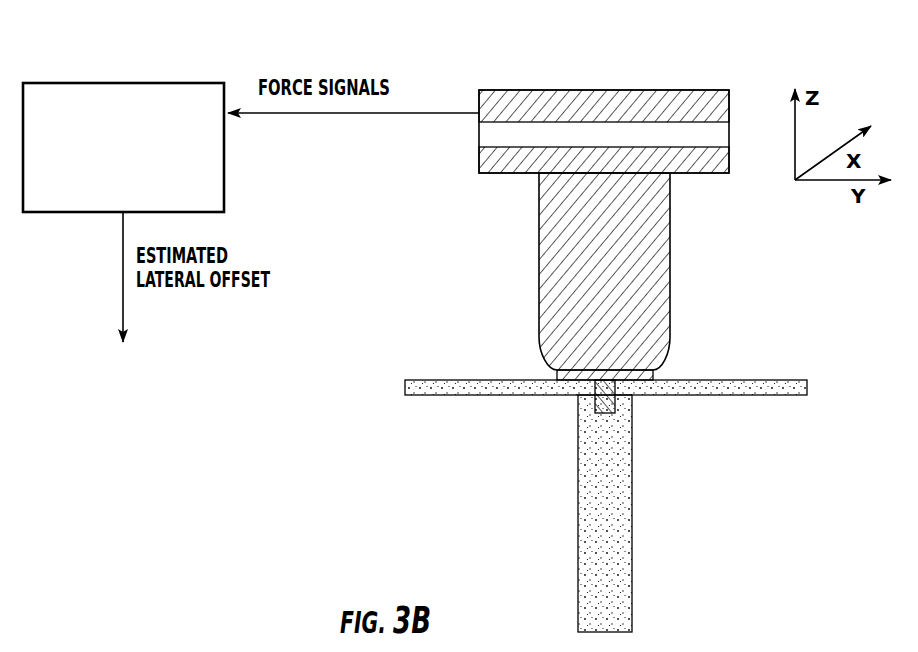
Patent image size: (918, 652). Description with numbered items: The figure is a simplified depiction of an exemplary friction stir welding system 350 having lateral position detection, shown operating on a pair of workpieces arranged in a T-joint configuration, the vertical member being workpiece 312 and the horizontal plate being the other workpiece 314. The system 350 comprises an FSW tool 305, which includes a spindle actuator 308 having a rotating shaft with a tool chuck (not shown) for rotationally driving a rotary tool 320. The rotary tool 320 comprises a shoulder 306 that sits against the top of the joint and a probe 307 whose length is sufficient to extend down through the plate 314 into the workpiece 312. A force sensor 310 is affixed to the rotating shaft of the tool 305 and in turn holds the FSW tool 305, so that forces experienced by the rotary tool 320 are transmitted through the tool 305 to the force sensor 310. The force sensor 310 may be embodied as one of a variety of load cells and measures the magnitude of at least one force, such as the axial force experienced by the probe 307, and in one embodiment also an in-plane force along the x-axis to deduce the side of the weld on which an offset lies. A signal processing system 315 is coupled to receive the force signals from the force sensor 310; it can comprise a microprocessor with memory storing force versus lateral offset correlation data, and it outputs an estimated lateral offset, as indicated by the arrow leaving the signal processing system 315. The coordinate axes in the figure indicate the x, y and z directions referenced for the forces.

The signal processing system 315 is at (137, 83).
The force sensor 310 is at (694, 90).
The spindle actuator 308 is at (539, 261).
The FSW tool 305 is at (695, 294).
The shoulder 306 is at (653, 375).
The rotary tool 320 is at (547, 375).
The plate 314 is at (758, 396).
The workpiece 312 is at (625, 582).
The probe 307 is at (583, 405).
The FSW system 350 is at (272, 406).